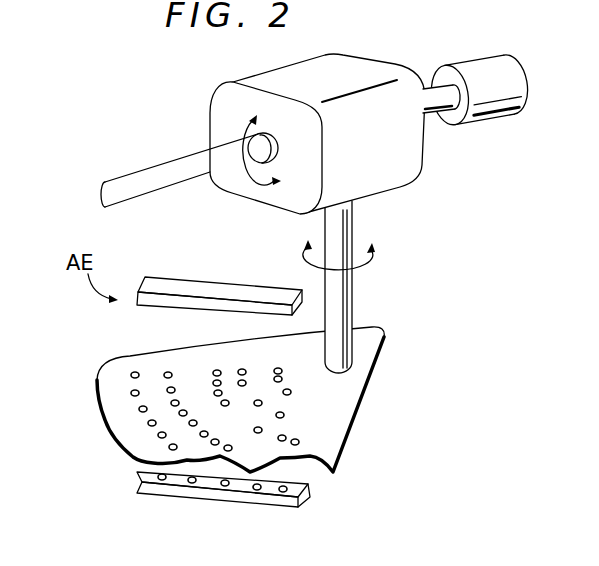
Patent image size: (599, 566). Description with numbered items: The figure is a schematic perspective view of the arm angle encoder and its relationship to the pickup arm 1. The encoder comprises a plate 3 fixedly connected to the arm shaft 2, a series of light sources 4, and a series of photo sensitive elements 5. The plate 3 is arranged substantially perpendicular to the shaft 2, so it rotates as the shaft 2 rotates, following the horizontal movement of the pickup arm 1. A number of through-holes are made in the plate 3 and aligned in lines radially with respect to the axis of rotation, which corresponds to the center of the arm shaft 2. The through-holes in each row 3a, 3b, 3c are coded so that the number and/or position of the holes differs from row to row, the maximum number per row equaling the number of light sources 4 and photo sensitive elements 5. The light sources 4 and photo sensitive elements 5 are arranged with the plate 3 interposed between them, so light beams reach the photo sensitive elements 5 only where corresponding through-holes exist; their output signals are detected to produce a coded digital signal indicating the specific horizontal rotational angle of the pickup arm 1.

The pickup arm 1 is at (167, 181).
The arm shaft 2 is at (343, 279).
The plate 3 is at (363, 357).
The row of through-holes 3a is at (133, 375).
The row of through-holes 3b is at (135, 394).
The row of through-holes 3c is at (143, 410).
The series of light sources 4 is at (199, 287).
The series of photo sensitive elements 5 is at (309, 498).